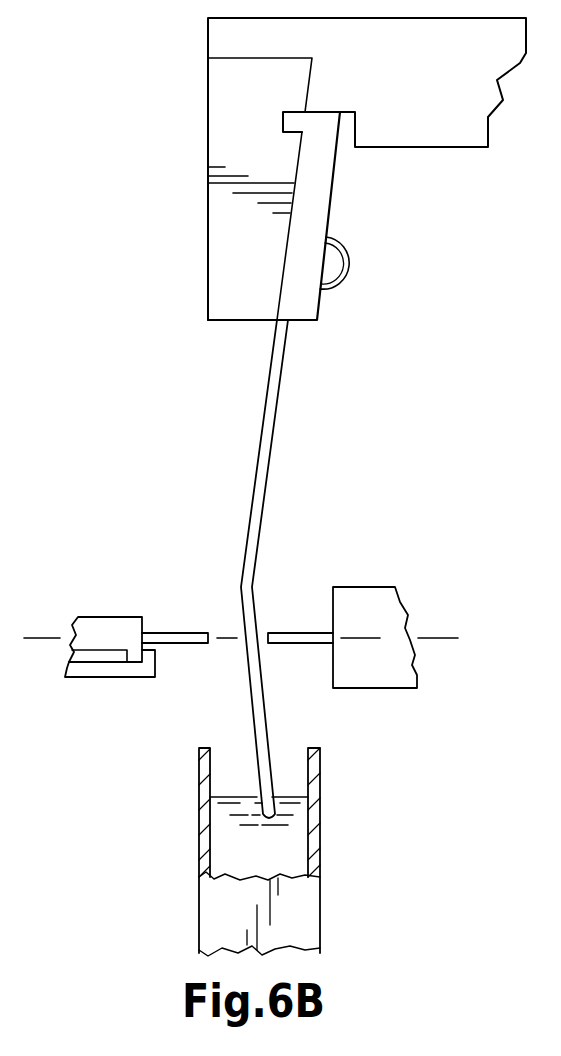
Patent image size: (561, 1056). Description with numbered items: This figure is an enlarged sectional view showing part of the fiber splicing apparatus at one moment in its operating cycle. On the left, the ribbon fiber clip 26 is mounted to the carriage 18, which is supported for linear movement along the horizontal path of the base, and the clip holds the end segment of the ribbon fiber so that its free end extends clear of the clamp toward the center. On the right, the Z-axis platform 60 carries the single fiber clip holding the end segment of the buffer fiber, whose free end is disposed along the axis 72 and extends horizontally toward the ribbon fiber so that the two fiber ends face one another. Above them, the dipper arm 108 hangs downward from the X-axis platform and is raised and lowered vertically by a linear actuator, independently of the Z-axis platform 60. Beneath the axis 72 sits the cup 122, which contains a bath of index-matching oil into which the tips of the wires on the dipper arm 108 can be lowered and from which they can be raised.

The dipper arm 108 is at (422, 133).
The ribbon fiber clip 26 is at (108, 627).
The carriage 18 is at (103, 668).
The Z-axis platform 60 is at (366, 598).
The axis 72 is at (440, 637).
The cup 122 is at (320, 785).